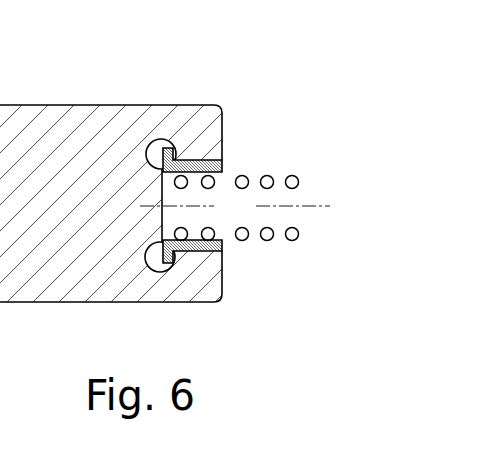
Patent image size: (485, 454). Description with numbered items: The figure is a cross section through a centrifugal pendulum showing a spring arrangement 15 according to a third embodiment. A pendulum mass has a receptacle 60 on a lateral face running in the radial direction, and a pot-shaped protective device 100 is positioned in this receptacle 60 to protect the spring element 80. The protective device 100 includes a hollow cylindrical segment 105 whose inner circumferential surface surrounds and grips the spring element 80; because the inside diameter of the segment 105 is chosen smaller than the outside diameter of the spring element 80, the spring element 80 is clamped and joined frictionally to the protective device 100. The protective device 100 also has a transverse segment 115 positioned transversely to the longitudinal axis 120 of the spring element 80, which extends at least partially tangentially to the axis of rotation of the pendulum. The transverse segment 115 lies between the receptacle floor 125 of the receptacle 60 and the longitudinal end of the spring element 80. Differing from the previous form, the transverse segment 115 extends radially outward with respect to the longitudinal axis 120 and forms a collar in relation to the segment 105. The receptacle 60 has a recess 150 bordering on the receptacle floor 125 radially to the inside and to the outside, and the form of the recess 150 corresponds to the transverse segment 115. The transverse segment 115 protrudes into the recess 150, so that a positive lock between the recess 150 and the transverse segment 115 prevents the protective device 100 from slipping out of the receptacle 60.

The spring arrangement 15 is at (193, 90).
The receptacle 60 is at (173, 146).
The receptacle floor 125 is at (169, 216).
The transverse segment 115 is at (176, 152).
The hollow cylindrical segment 105 is at (220, 164).
The recess 150 is at (168, 259).
The spring element 80 is at (300, 234).
The protective device 100 is at (190, 174).
The longitudinal axis 120 is at (316, 207).